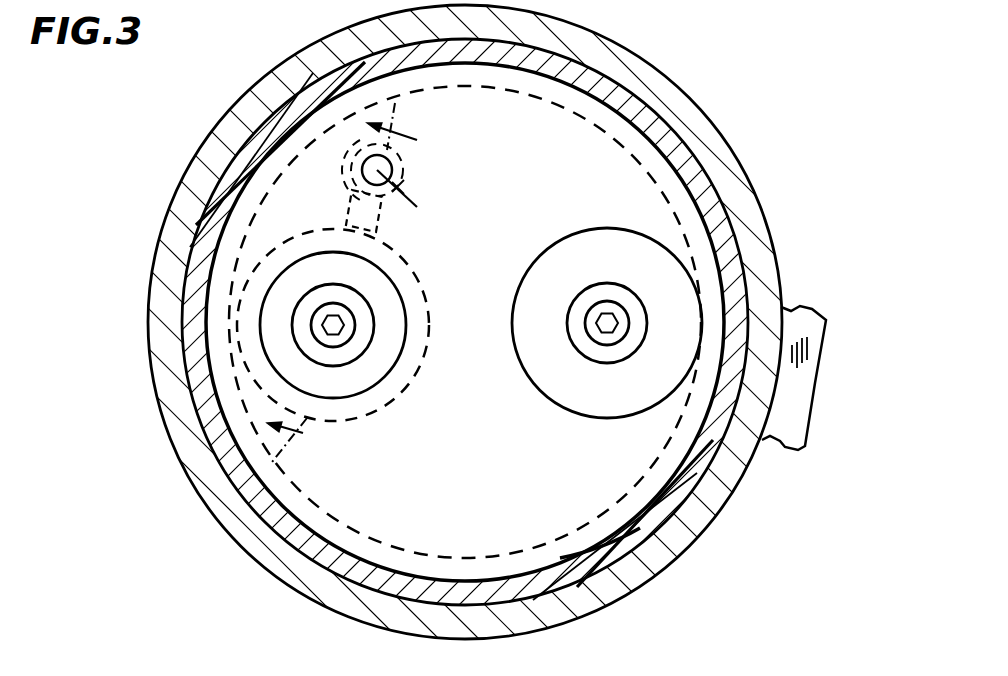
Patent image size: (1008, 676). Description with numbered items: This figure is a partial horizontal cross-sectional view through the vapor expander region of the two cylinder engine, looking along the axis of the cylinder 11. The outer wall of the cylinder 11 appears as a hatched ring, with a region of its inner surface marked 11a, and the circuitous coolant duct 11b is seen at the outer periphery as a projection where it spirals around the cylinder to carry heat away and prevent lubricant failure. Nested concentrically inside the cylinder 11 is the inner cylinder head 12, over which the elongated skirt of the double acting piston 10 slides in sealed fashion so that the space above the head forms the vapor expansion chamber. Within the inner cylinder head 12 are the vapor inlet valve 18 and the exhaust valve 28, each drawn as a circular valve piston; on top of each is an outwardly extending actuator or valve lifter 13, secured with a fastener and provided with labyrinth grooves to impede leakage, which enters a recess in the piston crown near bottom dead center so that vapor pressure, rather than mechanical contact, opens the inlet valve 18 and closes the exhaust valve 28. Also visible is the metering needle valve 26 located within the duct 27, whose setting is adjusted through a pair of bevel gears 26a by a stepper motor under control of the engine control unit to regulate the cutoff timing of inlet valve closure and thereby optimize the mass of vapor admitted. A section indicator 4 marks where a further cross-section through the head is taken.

The piston 10 is at (333, 65).
The cylinder 11 is at (217, 128).
The inner surface of shell 11a is at (597, 543).
The coolant duct 11b is at (792, 397).
The inner cylinder head 12 is at (278, 273).
The valve lifter 13 is at (377, 325).
The vapor inlet valve 18 is at (257, 325).
The metering needle valve 26 is at (400, 168).
The bevel gears 26a is at (414, 204).
The duct 27 is at (350, 212).
The exhaust valve 28 is at (700, 288).
The section line 4- 4 is at (353, 282).